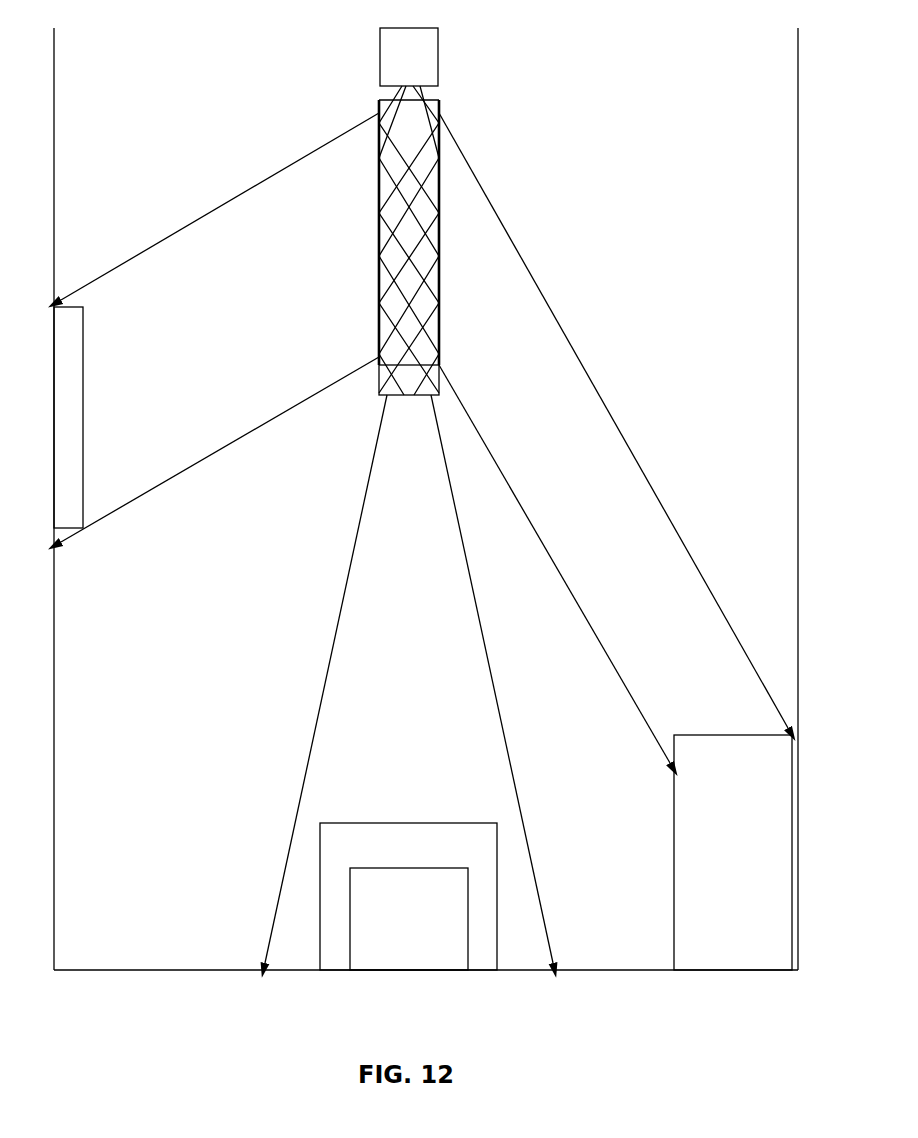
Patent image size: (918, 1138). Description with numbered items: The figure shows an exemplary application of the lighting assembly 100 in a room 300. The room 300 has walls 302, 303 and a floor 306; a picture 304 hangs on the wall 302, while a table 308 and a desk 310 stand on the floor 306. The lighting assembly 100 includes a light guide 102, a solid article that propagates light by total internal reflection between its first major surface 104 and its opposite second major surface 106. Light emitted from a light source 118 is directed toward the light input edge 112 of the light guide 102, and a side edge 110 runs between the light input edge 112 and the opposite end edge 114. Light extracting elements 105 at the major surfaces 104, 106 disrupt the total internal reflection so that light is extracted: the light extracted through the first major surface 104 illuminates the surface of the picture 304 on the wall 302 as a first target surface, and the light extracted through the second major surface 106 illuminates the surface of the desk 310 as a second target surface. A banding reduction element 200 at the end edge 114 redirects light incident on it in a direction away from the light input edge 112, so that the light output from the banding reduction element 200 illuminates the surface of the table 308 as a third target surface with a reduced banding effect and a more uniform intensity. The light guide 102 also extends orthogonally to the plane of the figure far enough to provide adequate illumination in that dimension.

The lighting assembly 100 is at (202, 81).
The light guide 102 is at (434, 299).
The first major surface 104 is at (379, 233).
The light extracting elements 105 is at (379, 277).
The second major surface 106 is at (440, 235).
The side edge 110 is at (430, 321).
The light input edge 112 is at (380, 100).
The end edge 114 is at (432, 367).
The light source 118 is at (438, 53).
The banding reduction element 200 is at (393, 397).
The room 300 is at (666, 290).
The wall 302 is at (54, 133).
The wall 303 is at (797, 403).
The picture 304 is at (83, 423).
The floor 306 is at (205, 968).
The table 308 is at (349, 823).
The desk 310 is at (674, 845).